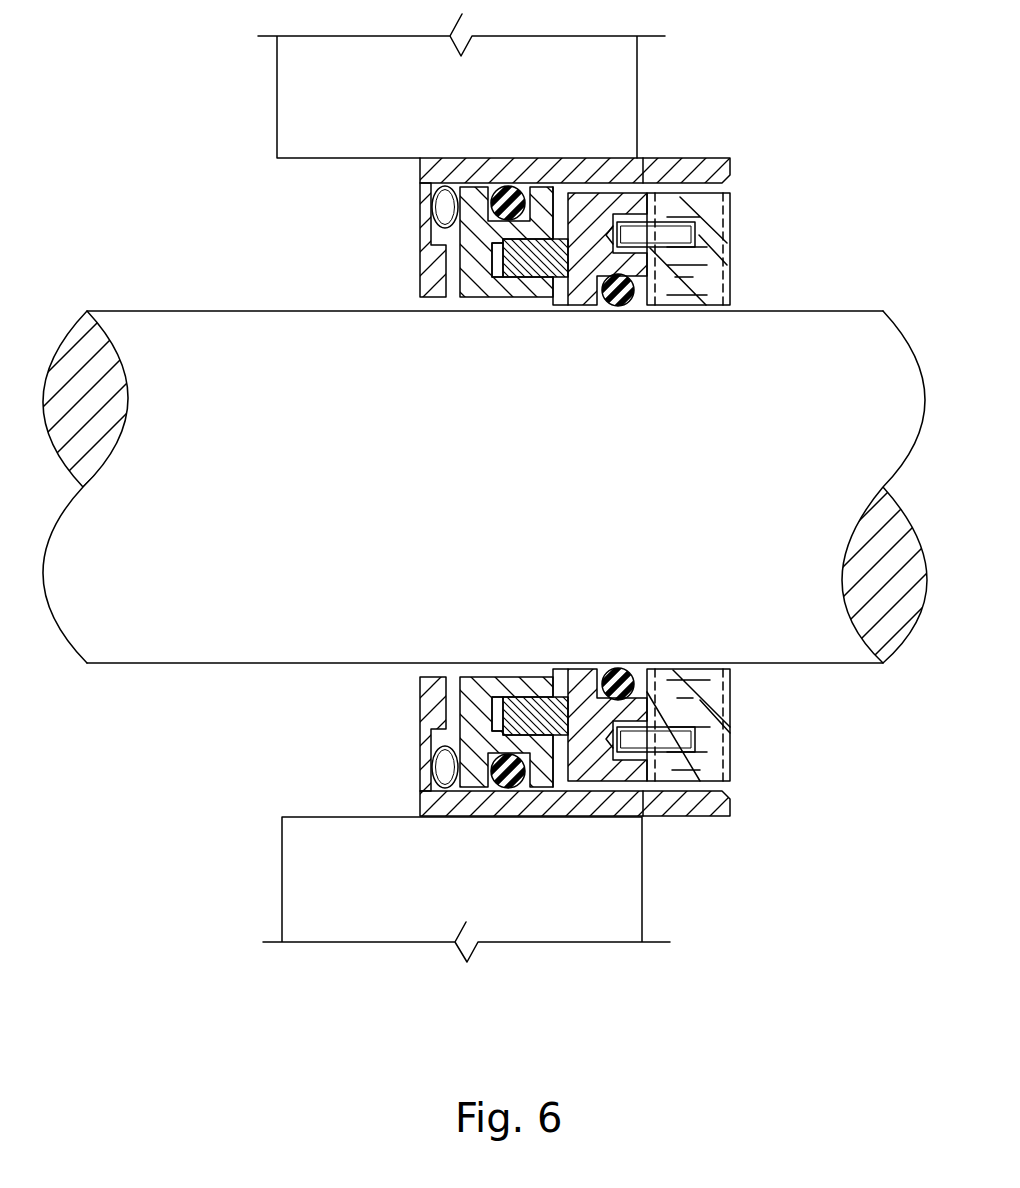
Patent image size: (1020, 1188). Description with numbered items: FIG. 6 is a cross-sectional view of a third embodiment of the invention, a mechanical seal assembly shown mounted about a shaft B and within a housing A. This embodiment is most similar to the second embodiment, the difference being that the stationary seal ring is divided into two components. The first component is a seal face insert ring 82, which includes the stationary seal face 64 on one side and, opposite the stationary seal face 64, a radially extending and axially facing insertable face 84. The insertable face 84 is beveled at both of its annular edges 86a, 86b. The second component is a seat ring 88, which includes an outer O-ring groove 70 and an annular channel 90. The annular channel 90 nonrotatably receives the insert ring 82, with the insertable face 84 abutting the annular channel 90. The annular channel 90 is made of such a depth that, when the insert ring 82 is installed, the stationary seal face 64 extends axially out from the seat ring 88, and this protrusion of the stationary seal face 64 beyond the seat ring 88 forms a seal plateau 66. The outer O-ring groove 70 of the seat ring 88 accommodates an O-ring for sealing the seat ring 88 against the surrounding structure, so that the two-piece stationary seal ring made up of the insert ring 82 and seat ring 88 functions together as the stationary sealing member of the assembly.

The housing A is at (313, 80).
The shaft B is at (285, 330).
The stationary seal face 64 is at (568, 244).
The seal plateau 66 is at (572, 303).
The outer O-ring groove 70 is at (514, 186).
The seal face insert ring 82 is at (548, 272).
The insertable face 84 is at (476, 245).
The annular edge 86a is at (513, 275).
The annular edge 86b is at (452, 193).
The seat ring 88 is at (452, 254).
The annular channel 90 is at (497, 262).